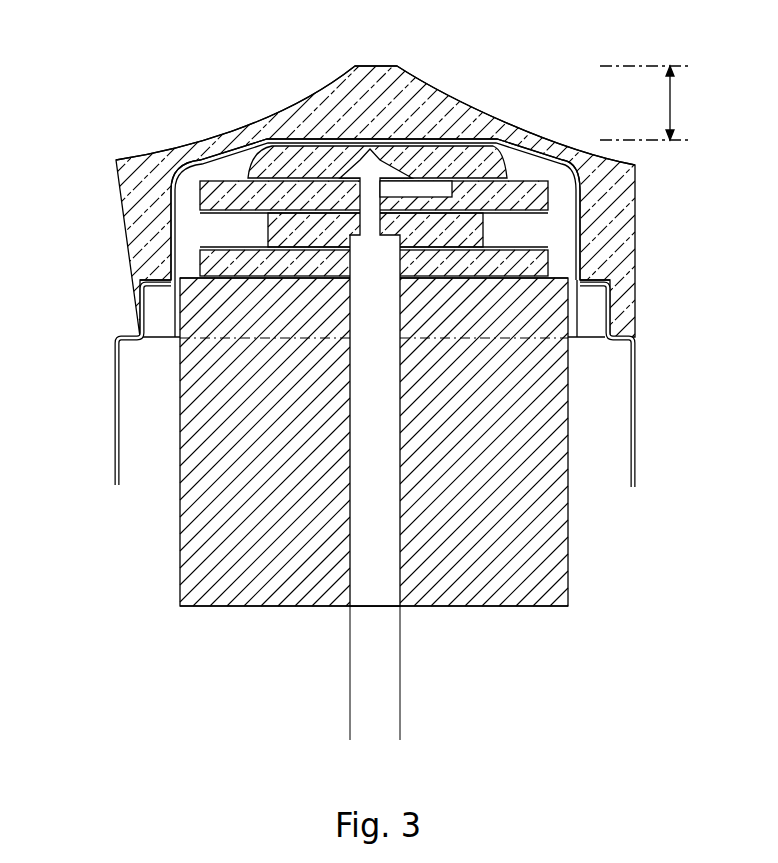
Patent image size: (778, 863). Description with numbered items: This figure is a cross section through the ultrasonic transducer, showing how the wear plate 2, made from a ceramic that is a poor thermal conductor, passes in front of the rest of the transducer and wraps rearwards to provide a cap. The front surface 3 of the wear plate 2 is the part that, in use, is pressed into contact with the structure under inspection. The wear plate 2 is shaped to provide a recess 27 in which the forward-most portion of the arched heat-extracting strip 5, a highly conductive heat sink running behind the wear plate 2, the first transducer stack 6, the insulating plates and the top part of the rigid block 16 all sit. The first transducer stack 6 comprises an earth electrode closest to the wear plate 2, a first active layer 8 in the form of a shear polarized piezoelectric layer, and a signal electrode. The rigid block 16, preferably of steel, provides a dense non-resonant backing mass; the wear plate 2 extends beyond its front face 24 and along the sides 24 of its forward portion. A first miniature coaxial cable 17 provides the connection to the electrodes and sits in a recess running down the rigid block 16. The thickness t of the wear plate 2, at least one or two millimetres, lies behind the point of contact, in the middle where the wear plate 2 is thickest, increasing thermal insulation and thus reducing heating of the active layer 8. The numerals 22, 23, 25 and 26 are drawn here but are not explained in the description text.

The wear plate 2 is at (617, 190).
The front surface 3 is at (531, 131).
The heat-extracting strip 5 is at (636, 418).
The first transducer stack 6 is at (264, 230).
The first active layer 8 is at (458, 162).
The rigid block 16 is at (553, 578).
The first miniature coaxial cable 17 is at (388, 710).
The membrane 22 is at (372, 140).
The liner 23 is at (244, 152).
The front face 24 is at (197, 273).
The wall portion 25 is at (172, 313).
The upper body portion 26 is at (552, 307).
The recess 27 is at (187, 217).
The thickness t is at (646, 103).